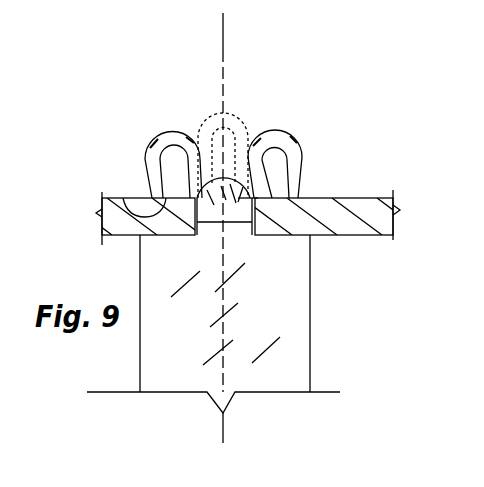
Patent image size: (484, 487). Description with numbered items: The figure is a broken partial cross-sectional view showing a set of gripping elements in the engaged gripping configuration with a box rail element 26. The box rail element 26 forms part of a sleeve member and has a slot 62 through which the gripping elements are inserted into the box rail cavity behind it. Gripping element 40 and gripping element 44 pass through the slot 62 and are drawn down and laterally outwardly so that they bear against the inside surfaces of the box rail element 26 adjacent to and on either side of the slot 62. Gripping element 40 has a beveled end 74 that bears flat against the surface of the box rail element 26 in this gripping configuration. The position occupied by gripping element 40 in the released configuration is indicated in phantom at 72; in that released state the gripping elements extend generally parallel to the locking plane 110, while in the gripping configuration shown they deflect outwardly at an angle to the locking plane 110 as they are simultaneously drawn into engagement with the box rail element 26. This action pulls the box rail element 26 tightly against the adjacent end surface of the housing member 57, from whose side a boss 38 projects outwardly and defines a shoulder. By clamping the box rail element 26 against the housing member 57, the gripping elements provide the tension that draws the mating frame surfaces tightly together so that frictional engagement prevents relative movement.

The locking plane 110 is at (223, 39).
The phantom position of gripping element 72 is at (200, 124).
The gripping element 40 is at (157, 130).
The gripping element 44 is at (292, 138).
The boss 38 is at (242, 195).
The box rail element 26 is at (350, 197).
The beveled end 74 is at (123, 198).
The slot 62 is at (195, 236).
The housing member 57 is at (310, 317).